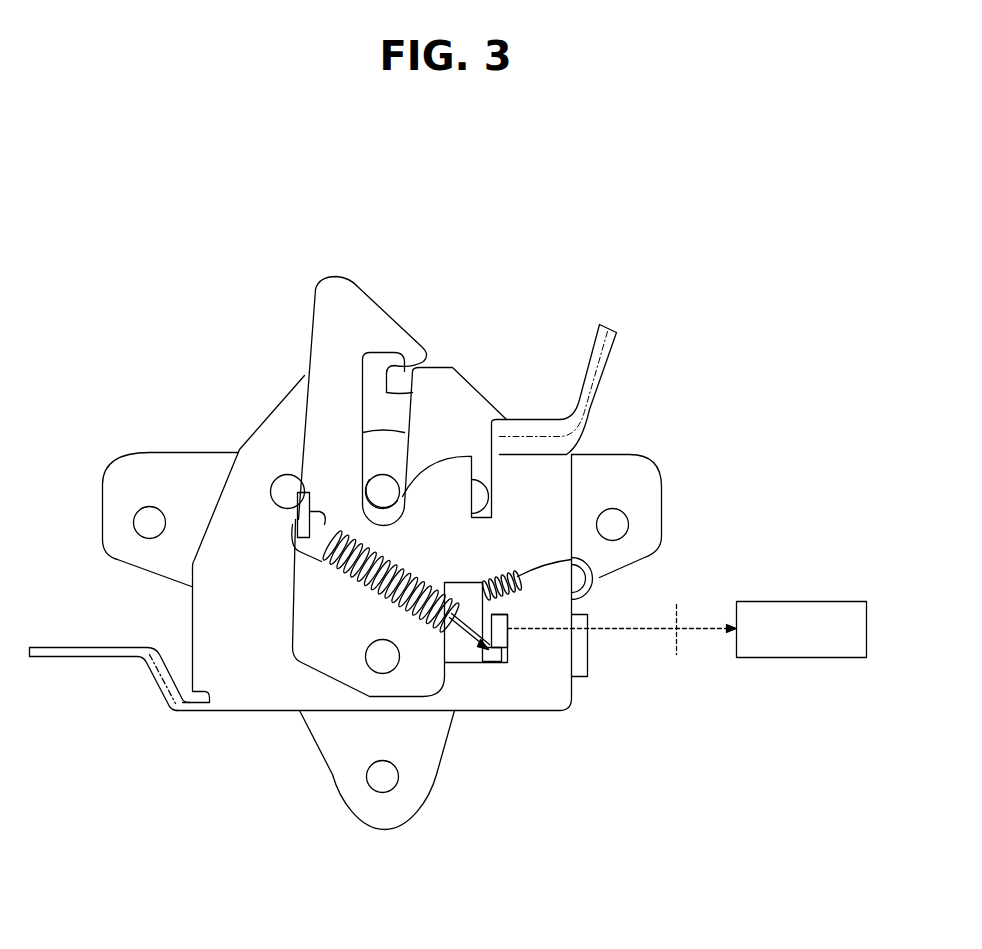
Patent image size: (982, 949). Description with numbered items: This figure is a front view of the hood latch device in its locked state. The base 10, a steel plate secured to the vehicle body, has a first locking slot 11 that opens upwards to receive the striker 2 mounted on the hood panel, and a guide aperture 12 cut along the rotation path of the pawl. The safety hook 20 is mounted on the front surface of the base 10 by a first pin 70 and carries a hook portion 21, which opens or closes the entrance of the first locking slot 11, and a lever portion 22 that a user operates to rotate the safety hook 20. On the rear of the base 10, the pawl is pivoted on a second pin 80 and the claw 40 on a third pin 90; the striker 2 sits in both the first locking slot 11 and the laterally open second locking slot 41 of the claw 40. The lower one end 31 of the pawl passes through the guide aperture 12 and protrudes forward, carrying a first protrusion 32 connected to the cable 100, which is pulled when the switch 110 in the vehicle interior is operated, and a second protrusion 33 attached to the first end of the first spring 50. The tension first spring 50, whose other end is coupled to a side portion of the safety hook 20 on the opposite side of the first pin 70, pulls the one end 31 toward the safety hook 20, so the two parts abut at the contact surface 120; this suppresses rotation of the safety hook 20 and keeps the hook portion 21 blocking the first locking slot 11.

The striker 2 is at (380, 495).
The base 10 is at (207, 615).
The first locking slot 11 is at (385, 385).
The guide aperture 12 is at (535, 578).
The safety hook 20 is at (348, 655).
The hook portion 21 is at (357, 300).
The lever portion 22 is at (600, 384).
The one end of the pawl 31 is at (573, 796).
The first protrusion 32 is at (508, 640).
The second protrusion 33 is at (470, 655).
The claw 40 is at (387, 453).
The second locking slot 41 is at (402, 500).
The first spring 50 is at (347, 580).
The first pin 70 is at (387, 657).
The second pin 80 is at (477, 497).
The third pin 90 is at (285, 490).
The cable 100 is at (637, 632).
The switch 110 is at (800, 602).
The contact surface 120 is at (453, 655).